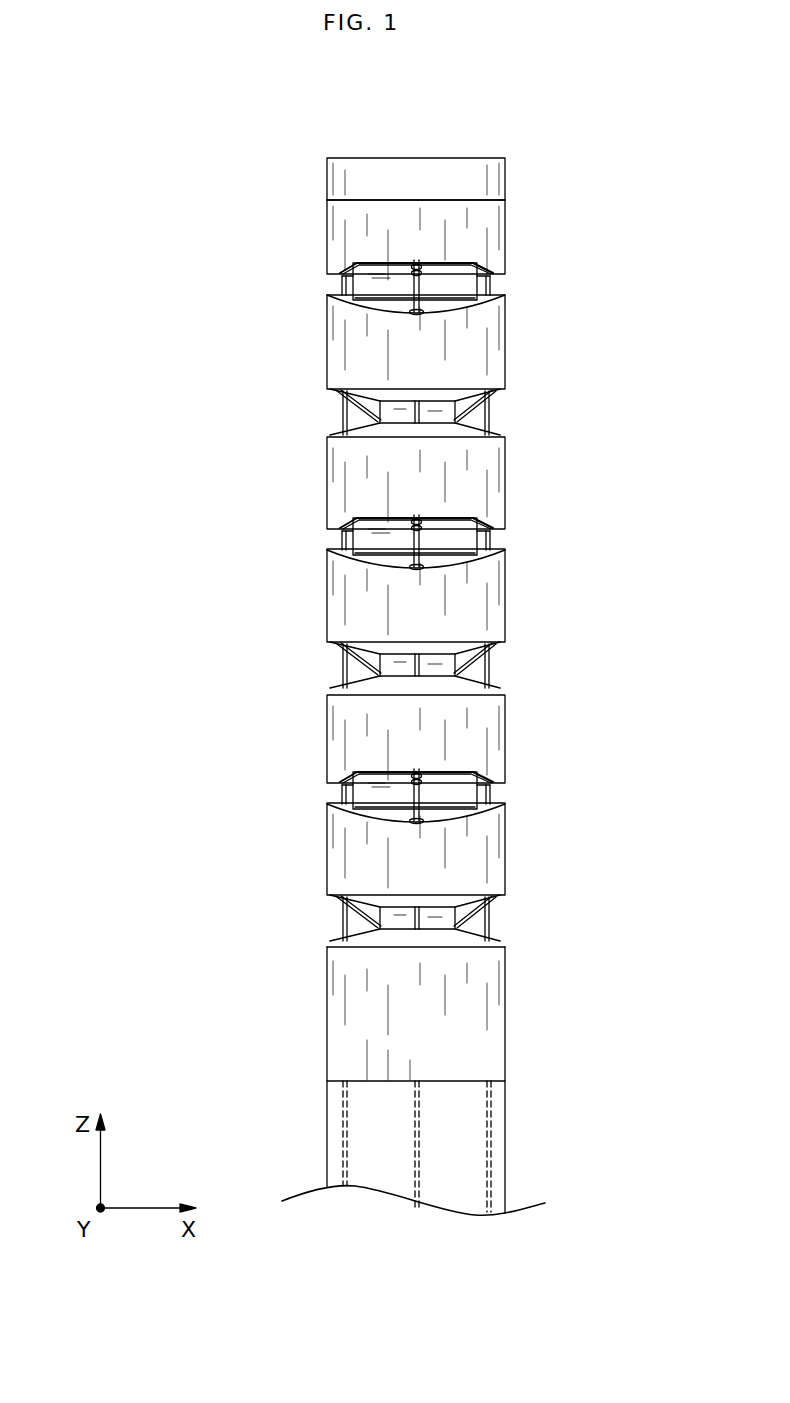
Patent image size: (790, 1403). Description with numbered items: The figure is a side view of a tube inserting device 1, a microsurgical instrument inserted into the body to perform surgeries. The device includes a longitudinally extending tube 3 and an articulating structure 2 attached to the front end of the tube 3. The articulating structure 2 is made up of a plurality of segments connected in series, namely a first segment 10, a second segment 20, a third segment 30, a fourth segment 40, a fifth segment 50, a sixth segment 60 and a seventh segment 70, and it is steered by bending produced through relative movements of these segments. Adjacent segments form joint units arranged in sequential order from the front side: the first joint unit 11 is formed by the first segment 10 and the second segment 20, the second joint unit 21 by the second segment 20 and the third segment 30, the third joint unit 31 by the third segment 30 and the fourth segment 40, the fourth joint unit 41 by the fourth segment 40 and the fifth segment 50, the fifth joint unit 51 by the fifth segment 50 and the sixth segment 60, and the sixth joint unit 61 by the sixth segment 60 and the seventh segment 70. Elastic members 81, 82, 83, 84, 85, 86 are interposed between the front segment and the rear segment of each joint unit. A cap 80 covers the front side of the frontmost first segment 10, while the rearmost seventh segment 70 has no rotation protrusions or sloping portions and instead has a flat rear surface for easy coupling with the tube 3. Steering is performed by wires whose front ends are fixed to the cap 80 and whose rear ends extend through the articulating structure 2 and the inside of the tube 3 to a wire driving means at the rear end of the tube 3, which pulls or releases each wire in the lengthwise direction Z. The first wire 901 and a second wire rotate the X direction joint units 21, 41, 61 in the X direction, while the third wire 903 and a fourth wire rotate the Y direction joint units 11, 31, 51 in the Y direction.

The tube inserting device 1 is at (238, 555).
The articulating structure 2 is at (278, 385).
The tube 3 is at (327, 1156).
The first segment 10 is at (507, 231).
The first joint unit 11 is at (607, 233).
The second segment 20 is at (507, 340).
The second joint unit 21 is at (607, 343).
The third segment 30 is at (507, 486).
The third joint unit 31 is at (607, 493).
The fourth segment 40 is at (507, 595).
The fourth joint unit 41 is at (607, 600).
The fifth segment 50 is at (507, 742).
The fifth joint unit 51 is at (607, 752).
The sixth segment 60 is at (507, 851).
The sixth joint unit 61 is at (607, 997).
The seventh segment 70 is at (507, 990).
The cap 80 is at (507, 176).
The elastic member 81 is at (460, 290).
The elastic member 82 is at (472, 424).
The elastic member 83 is at (460, 545).
The elastic member 84 is at (470, 676).
The elastic member 85 is at (460, 799).
The elastic member 86 is at (470, 929).
The first wire 901 is at (327, 1104).
The third wire 903 is at (418, 1160).